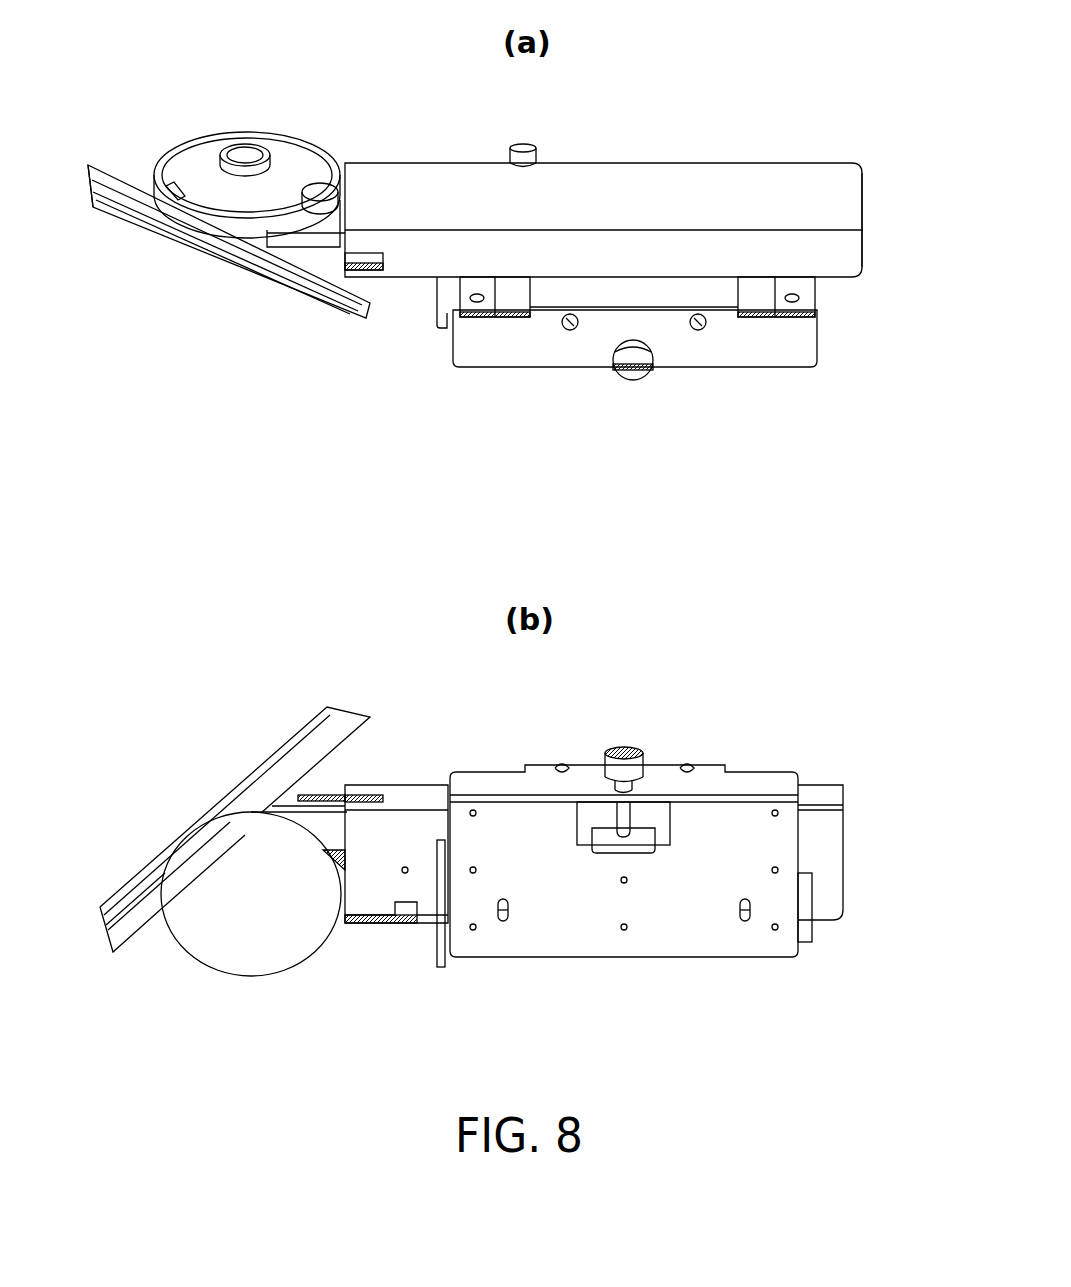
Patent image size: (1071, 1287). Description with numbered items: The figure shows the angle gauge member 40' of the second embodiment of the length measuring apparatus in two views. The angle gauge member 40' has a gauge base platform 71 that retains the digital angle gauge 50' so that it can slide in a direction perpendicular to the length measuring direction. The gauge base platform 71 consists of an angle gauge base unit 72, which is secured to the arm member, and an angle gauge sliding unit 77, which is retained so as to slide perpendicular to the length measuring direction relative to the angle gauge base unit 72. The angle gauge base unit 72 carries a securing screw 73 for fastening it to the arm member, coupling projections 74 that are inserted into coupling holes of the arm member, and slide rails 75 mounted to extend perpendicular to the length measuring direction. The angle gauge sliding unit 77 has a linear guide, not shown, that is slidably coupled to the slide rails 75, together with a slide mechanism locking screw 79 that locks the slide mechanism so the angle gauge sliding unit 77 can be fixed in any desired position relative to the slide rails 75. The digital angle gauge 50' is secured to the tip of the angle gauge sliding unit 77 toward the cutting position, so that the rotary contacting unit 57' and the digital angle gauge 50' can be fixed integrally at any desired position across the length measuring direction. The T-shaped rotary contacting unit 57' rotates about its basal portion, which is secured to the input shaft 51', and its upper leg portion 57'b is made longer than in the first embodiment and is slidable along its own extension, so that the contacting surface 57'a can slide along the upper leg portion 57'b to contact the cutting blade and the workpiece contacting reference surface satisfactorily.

The angle gauge member 40' is at (721, 372).
The digital angle gauge 50' is at (250, 564).
The input shaft 51' is at (236, 106).
The rotary contacting unit 57' is at (230, 594).
The contacting surface 57'a is at (205, 576).
The upper leg portion 57'b is at (222, 495).
The gauge base platform 71 is at (581, 163).
The angle gauge base unit 72 is at (818, 340).
The securing screw 73 is at (623, 381).
The coupling projections 74 is at (503, 922).
The slide rails 75 is at (797, 289).
The angle gauge sliding unit 77 is at (866, 187).
The slide mechanism locking screw 79 is at (511, 148).